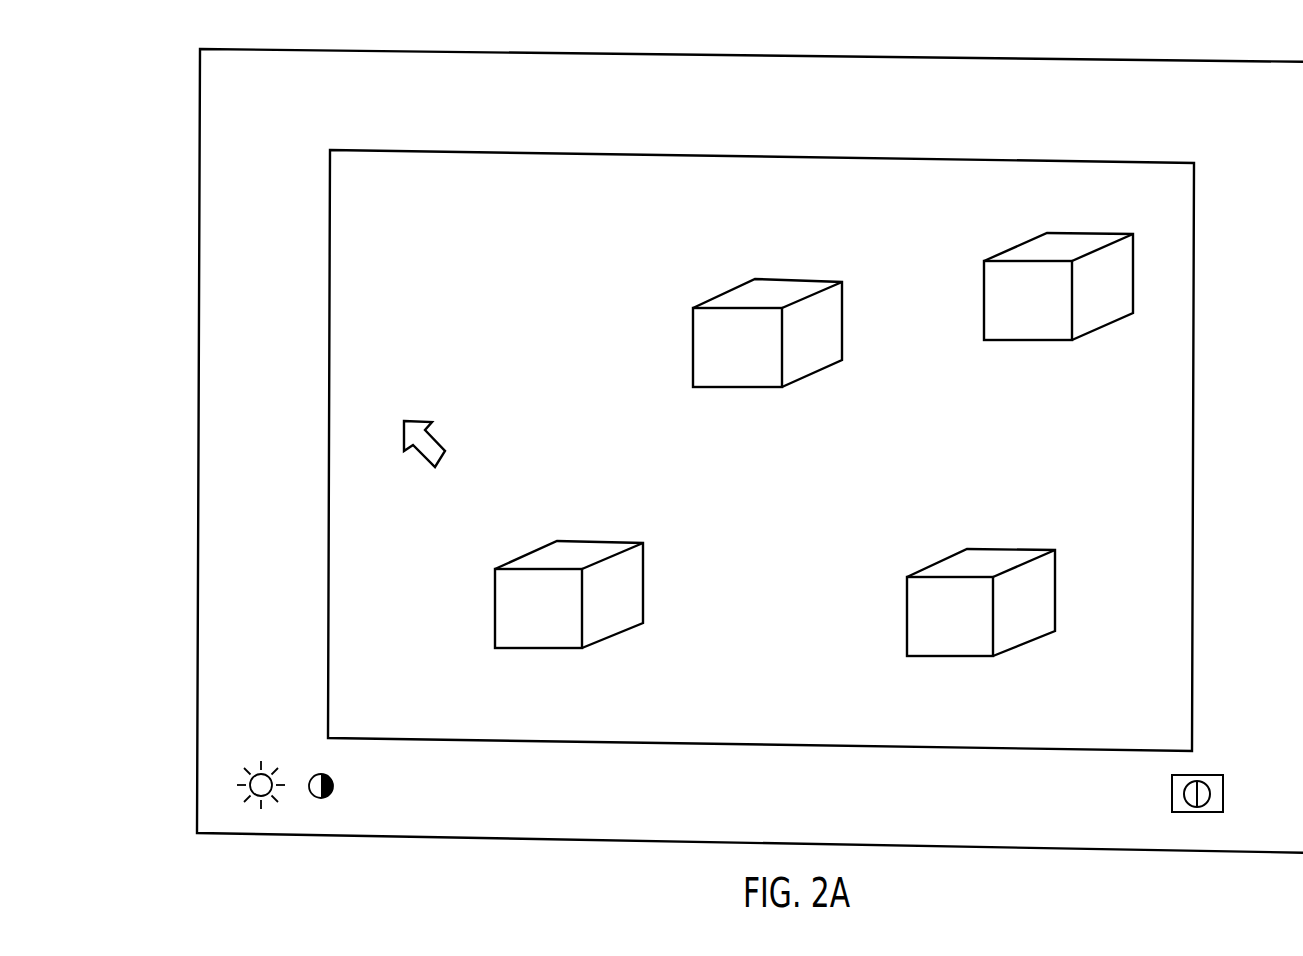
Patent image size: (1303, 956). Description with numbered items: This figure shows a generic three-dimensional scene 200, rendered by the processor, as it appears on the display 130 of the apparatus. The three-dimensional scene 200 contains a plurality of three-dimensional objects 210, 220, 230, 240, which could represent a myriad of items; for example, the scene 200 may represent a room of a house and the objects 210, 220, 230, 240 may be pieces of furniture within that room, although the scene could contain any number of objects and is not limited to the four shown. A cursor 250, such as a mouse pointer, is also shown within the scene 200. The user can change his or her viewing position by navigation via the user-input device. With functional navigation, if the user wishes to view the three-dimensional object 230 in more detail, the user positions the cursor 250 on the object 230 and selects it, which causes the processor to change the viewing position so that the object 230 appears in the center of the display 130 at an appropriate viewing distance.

The display 130 is at (241, 66).
The three-dimensional scene 200 is at (356, 671).
The 3D object 210 is at (515, 567).
The 3D object 220 is at (927, 575).
The 3D object 230 is at (713, 305).
The 3D object 240 is at (1003, 258).
The cursor 250 is at (446, 447).